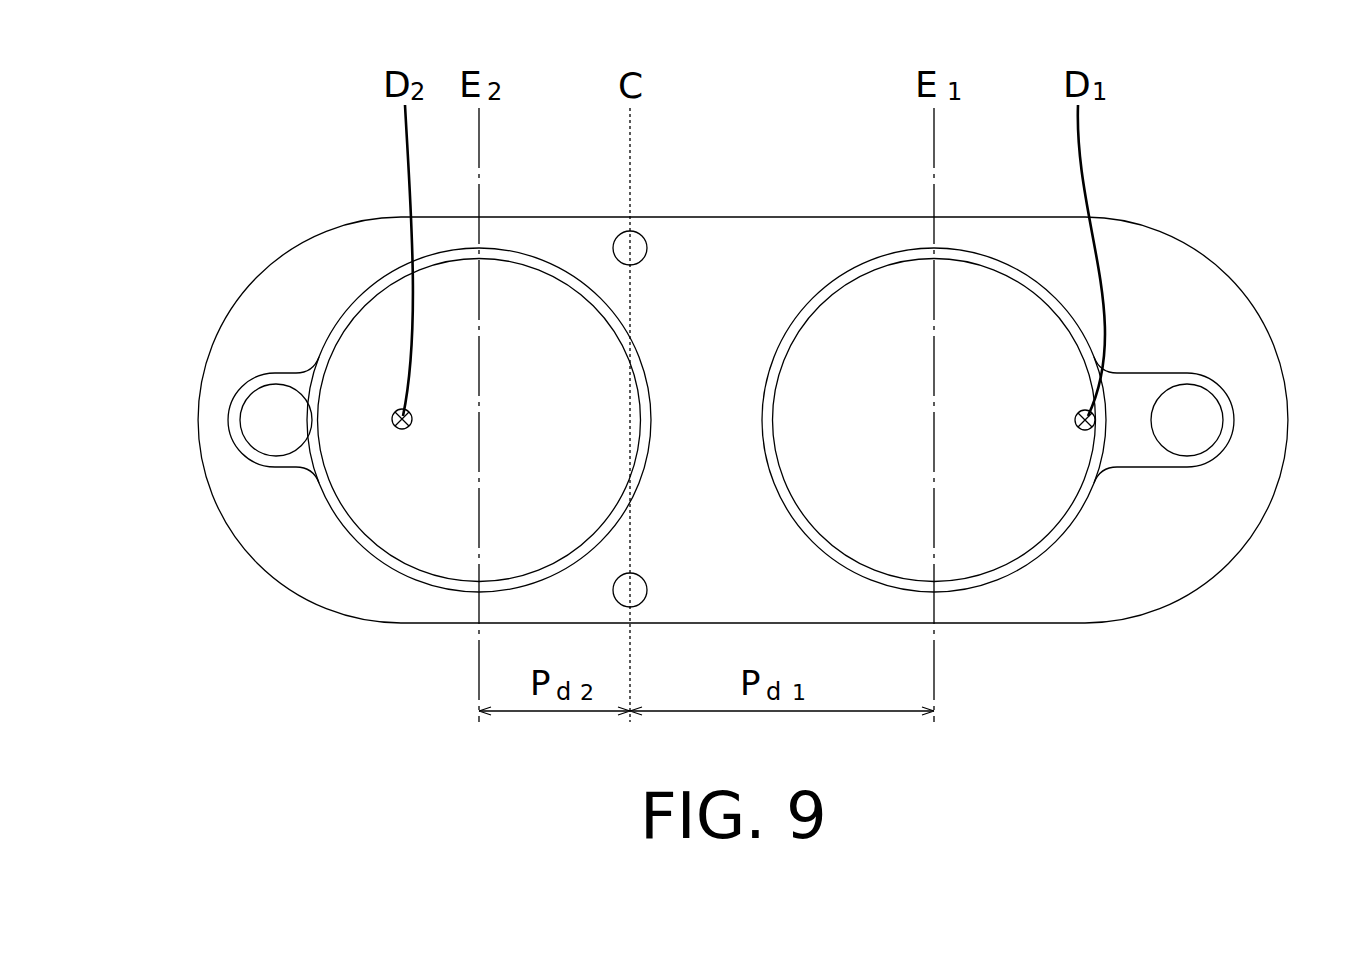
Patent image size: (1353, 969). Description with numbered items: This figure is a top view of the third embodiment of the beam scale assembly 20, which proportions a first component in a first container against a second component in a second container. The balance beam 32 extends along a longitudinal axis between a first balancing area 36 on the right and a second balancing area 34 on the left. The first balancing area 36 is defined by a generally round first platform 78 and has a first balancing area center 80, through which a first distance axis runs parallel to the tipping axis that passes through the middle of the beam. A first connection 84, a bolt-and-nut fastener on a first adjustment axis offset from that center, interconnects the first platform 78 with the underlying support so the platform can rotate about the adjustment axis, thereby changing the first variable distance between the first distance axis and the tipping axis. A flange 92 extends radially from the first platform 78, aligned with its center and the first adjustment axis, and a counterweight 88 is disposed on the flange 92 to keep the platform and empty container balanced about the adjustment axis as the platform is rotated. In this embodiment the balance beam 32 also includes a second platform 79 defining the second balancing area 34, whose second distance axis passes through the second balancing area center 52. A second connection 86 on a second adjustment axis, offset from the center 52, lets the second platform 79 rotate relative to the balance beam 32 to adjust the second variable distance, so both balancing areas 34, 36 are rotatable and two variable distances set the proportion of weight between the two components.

The beam scale assembly 20 is at (743, 311).
The balance beam 32 is at (705, 217).
The second balancing area 34 is at (371, 296).
The second platform 79 is at (535, 254).
The first balancing area 36 is at (861, 268).
The first platform 78 is at (989, 253).
The flange 92 is at (258, 467).
The counterweight 88 is at (265, 426).
The second connection 86 is at (400, 422).
The first connection 84 is at (1090, 430).
The second balancing area center 52 is at (478, 422).
The first balancing area center 80 is at (934, 422).